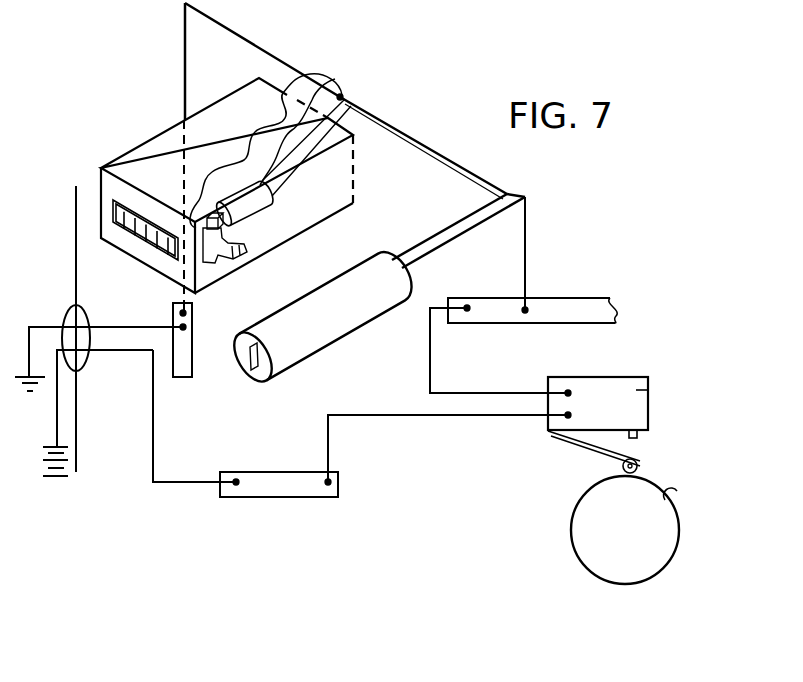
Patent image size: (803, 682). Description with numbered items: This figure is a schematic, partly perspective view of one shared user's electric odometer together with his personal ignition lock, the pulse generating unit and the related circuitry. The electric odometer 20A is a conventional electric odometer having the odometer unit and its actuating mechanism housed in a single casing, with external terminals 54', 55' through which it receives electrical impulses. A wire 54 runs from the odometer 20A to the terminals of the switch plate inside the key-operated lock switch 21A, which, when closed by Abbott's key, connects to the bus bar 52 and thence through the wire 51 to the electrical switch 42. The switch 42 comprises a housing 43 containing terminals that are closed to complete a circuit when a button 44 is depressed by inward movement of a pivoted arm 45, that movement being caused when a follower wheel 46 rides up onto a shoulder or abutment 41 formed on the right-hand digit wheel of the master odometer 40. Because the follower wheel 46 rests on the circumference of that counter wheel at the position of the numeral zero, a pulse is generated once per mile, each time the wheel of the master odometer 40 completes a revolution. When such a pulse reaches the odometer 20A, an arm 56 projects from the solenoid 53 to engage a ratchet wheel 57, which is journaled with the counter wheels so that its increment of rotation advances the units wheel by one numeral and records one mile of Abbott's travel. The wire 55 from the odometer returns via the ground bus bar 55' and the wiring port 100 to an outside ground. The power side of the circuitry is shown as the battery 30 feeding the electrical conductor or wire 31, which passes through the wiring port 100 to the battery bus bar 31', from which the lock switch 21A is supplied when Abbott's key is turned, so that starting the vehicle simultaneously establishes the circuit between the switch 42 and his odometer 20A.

The wiring port 100 is at (66, 315).
The battery 30 is at (48, 468).
The electrical conductor or wire 31 is at (194, 416).
The battery bus bar 31' is at (394, 475).
The ground bus bar 55' is at (308, 240).
The lock switch 21A is at (260, 377).
The electric odometer 20A is at (332, 91).
The wire 54 is at (378, 156).
The external terminal 54' is at (424, 150).
The wire 55 is at (236, 115).
The solenoid 53 is at (256, 205).
The arm 56 is at (226, 222).
The ratchet wheel 57 is at (242, 254).
The bus bar 52 is at (556, 323).
The electric conductor or wire 51 is at (430, 336).
The electrical switch 42 is at (642, 377).
The housing 43 is at (646, 390).
The button 44 is at (635, 437).
The pivoted arm 45 is at (590, 450).
The follower wheel 46 is at (645, 461).
The master odometer 40 is at (680, 530).
The shoulder or abutment 41 is at (678, 490).